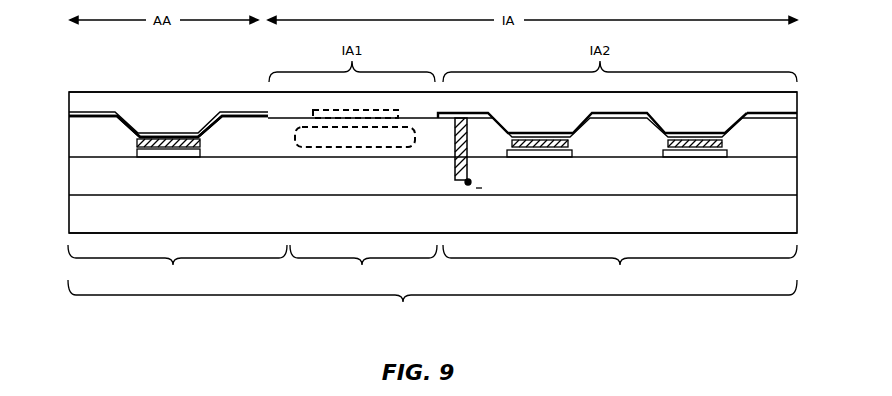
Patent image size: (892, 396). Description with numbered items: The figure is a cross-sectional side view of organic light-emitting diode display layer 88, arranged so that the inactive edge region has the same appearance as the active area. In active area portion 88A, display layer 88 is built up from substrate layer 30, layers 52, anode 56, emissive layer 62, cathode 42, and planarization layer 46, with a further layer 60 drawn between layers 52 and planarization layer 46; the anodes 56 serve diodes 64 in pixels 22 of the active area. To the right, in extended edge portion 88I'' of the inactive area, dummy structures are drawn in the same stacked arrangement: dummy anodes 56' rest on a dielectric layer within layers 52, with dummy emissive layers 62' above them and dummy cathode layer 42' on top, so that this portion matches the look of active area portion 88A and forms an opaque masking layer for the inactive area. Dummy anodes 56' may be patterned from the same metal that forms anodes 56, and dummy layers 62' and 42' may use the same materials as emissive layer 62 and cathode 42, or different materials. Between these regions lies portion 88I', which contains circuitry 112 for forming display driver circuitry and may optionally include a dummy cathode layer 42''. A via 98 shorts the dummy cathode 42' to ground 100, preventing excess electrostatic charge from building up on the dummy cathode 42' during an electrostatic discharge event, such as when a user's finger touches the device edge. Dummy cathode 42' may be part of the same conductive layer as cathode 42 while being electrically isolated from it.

The pixel 22 is at (88, 84).
The planarization layer 46 is at (75, 102).
The planarization layer 60 is at (75, 140).
The layers 52 is at (75, 177).
The substrate layer 30 is at (75, 213).
The diode 64 is at (176, 104).
The cathode 42 is at (233, 117).
The dummy cathode layer 42' is at (797, 105).
The dummy cathode layer 42'' is at (572, 115).
The emissive layer 62 is at (142, 136).
The anode 56 is at (142, 149).
The dummy emissive layer 62' is at (725, 136).
The dummy anode 56' is at (723, 149).
The circuitry 112 is at (297, 141).
The via 98 is at (455, 150).
The ground 100 is at (471, 182).
The organic light-emitting diode display layer 88 is at (432, 302).
The active area portion 88A is at (177, 265).
The inactive portion 88I' is at (363, 265).
The extended edge portion 88I'' is at (620, 265).